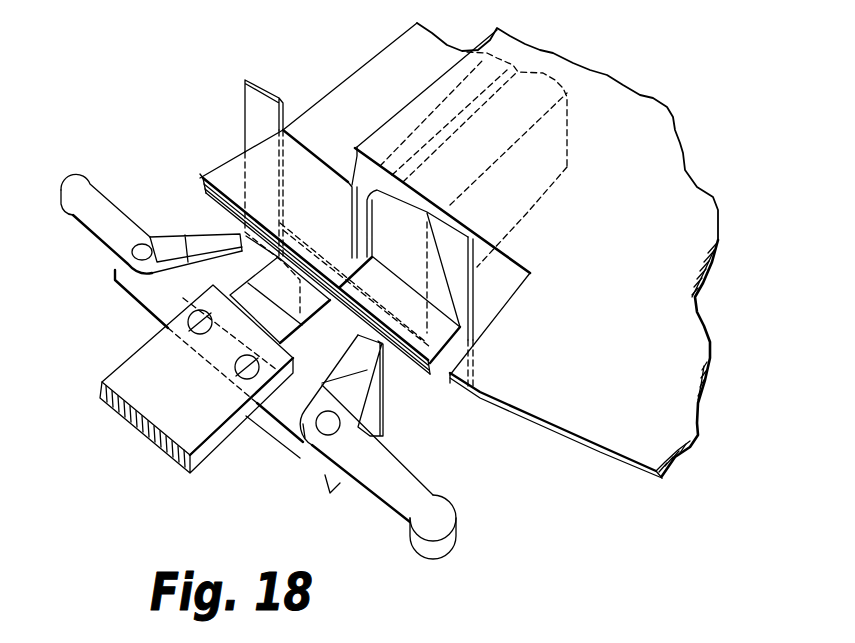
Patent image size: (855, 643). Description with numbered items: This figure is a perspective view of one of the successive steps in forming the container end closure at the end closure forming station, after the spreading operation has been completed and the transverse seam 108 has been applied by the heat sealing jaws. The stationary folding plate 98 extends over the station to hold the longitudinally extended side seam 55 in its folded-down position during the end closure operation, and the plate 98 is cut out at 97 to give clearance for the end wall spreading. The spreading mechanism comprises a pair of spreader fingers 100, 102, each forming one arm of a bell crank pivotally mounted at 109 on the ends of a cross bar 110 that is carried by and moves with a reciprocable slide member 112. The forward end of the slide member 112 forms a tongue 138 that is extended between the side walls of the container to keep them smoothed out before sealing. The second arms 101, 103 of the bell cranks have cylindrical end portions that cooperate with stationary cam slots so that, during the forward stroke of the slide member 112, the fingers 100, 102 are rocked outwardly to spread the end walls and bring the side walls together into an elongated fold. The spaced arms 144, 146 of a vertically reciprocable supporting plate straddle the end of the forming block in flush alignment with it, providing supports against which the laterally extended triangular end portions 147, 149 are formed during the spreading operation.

The folding plate 98 is at (718, 240).
The triangular end portion 147 is at (253, 150).
The arm of supporting plate 144 is at (262, 65).
The transverse seam 108 is at (224, 184).
The side seam 55 is at (372, 196).
The cut out 97 is at (513, 297).
The triangular end portion 149 is at (445, 302).
The arm of supporting plate 146 is at (465, 256).
The second arm of bell crank 101 is at (101, 203).
The spreader finger 100 is at (225, 234).
The pivot 109 is at (138, 254).
The slide member 112 is at (168, 457).
The tongue 138 is at (306, 314).
The cross bar 110 is at (278, 441).
The second arm of bell crank 103 is at (408, 482).
The spreader finger 102 is at (365, 372).